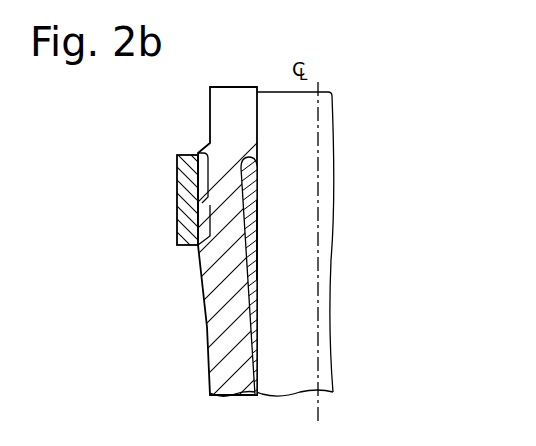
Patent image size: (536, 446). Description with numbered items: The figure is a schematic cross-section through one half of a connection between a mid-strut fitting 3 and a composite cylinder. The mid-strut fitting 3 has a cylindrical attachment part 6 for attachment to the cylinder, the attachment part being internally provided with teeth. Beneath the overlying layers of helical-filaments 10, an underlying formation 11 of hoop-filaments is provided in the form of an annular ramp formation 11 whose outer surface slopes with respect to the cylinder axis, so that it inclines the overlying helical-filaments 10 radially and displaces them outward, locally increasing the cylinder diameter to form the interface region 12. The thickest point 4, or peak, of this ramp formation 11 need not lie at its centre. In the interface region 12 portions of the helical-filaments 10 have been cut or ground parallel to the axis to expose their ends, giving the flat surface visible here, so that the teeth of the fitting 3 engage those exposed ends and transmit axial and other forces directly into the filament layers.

The mid-strut fitting 3 is at (178, 153).
The thickest point 4 is at (250, 169).
The cylindrical attachment part 6 is at (190, 233).
The helical-filaments 10 is at (241, 125).
The underlying formation of hoop-filaments 11 is at (257, 240).
The interface region 12 is at (208, 198).